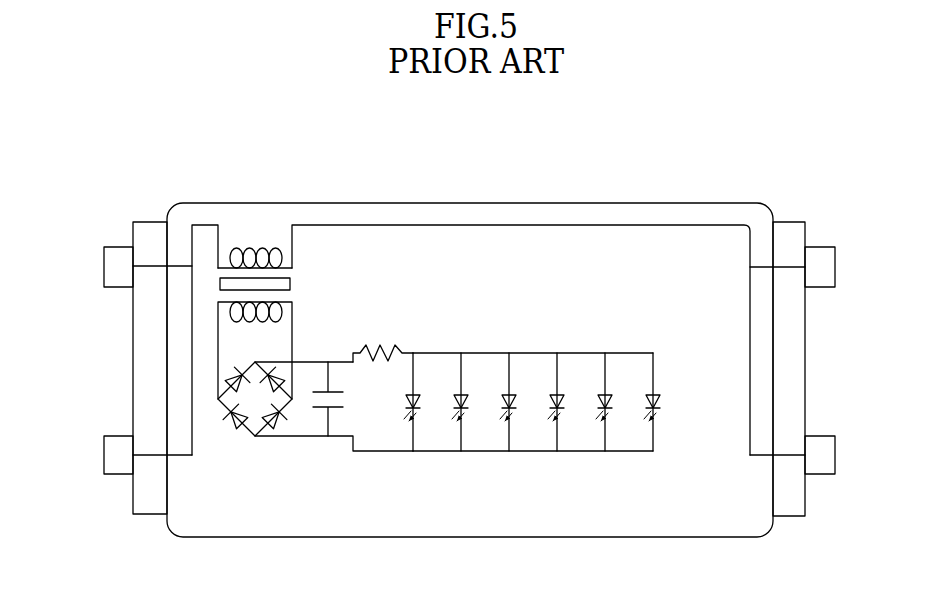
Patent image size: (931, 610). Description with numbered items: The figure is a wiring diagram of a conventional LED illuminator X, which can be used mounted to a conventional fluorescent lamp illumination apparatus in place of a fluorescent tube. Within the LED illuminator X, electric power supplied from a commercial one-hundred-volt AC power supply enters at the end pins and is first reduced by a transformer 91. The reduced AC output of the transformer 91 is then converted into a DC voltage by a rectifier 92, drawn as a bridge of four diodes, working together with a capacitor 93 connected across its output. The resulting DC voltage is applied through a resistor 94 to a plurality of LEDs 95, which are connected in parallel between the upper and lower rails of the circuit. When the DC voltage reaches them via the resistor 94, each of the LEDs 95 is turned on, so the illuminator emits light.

The LED illuminator X is at (76, 150).
The transformer 91 is at (253, 242).
The rectifier 92 is at (252, 440).
The capacitor 93 is at (326, 414).
The resistor 94 is at (376, 343).
The LEDs 95 is at (400, 388).